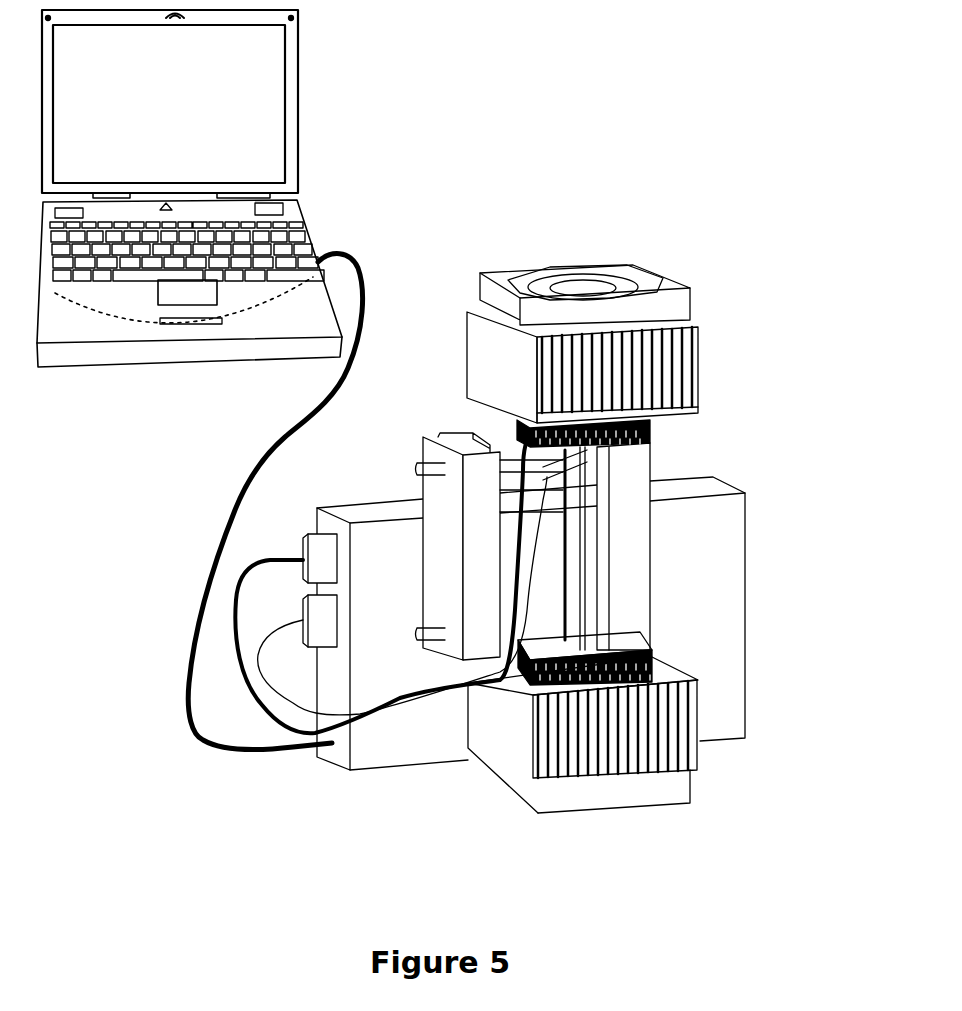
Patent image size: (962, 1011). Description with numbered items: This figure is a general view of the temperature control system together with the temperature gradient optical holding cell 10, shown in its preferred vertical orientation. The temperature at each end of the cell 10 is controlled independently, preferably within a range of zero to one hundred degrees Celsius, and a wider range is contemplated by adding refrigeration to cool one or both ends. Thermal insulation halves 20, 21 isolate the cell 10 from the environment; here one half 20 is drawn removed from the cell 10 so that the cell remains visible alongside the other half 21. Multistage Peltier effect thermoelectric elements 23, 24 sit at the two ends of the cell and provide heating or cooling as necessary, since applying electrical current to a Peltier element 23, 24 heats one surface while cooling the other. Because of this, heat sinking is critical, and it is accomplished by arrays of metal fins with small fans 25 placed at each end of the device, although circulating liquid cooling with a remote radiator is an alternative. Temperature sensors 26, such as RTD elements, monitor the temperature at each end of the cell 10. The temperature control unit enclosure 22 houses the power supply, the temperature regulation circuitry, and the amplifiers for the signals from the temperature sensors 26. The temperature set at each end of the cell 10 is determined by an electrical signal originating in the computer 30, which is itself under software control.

The computer 30 is at (220, 130).
The small fan 25 is at (670, 310).
The multistage Peltier effect thermoelectric element 23 is at (488, 360).
The temperature sensor 26 is at (517, 425).
The thermal insulation half 21 is at (625, 472).
The thermal insulation half 20 is at (452, 518).
The temperature gradient optical holding cell 10 is at (570, 562).
The temperature control unit enclosure 22 is at (390, 730).
The multistage Peltier effect thermoelectric element 24 is at (500, 722).